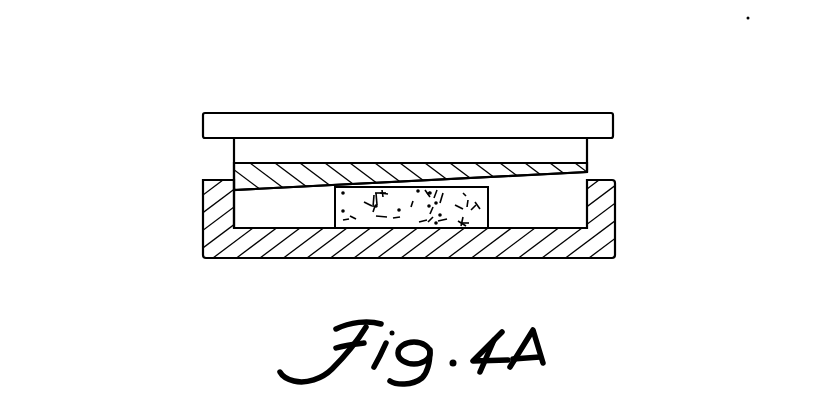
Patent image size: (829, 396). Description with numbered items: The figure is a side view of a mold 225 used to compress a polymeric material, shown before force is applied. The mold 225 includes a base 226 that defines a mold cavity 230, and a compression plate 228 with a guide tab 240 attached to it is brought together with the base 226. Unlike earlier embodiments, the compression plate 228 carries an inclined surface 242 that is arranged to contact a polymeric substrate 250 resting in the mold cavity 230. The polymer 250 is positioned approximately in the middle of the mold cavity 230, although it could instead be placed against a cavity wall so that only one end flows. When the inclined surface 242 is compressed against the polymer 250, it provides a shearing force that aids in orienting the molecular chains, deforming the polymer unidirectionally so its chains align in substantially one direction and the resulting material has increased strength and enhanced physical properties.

The mold 225 is at (155, 115).
The compression plate 228 is at (604, 113).
The guide tab 240 is at (587, 153).
The inclined surface 242 is at (246, 177).
The mold cavity 230 is at (553, 221).
The base 226 is at (600, 240).
The polymeric substrate 250 is at (435, 228).